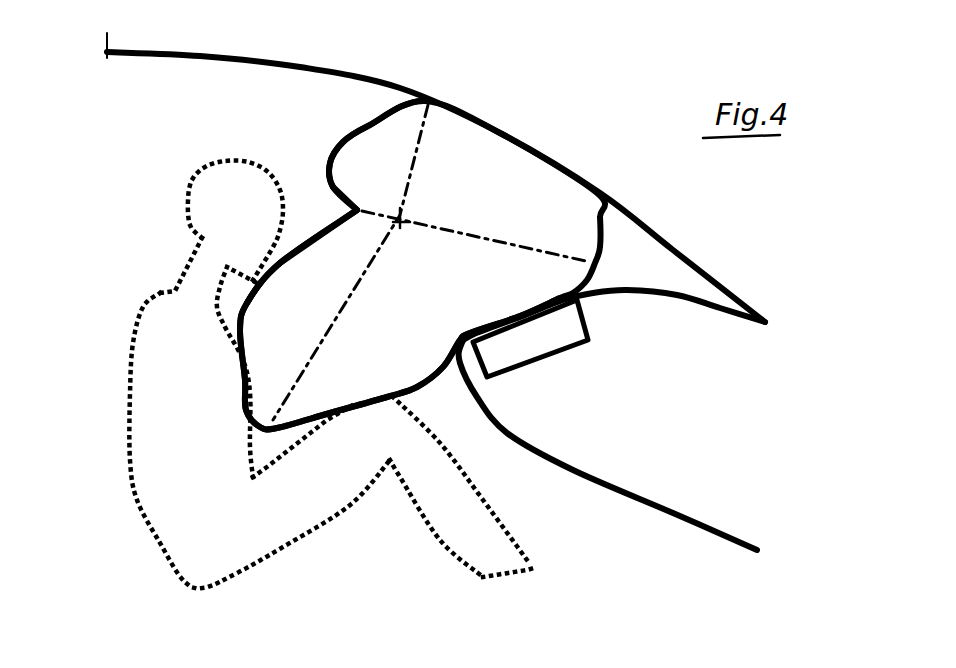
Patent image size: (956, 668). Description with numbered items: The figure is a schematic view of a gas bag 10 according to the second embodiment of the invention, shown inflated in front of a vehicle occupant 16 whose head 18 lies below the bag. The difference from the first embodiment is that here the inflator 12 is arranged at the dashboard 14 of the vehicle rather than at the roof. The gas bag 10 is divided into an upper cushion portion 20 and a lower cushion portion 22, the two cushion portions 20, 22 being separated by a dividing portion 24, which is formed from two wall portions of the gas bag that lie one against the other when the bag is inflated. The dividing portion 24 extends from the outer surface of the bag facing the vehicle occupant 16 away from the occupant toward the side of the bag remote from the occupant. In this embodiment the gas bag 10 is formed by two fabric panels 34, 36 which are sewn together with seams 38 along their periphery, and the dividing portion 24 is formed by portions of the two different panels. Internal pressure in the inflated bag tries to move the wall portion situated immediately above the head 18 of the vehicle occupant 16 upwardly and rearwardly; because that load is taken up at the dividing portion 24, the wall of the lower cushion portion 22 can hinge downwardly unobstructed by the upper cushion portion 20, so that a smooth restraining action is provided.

The gas bag 10 is at (605, 222).
The inflator 12 is at (552, 340).
The dashboard 14 is at (680, 295).
The vehicle occupant 16 is at (157, 427).
The head 18 is at (223, 223).
The upper cushion portion 20 is at (469, 172).
The lower cushion portion 22 is at (371, 343).
The dividing portion 24 is at (355, 208).
The fabric panel 34 is at (363, 130).
The fabric panel 36 is at (284, 258).
The seams 38 is at (411, 172).